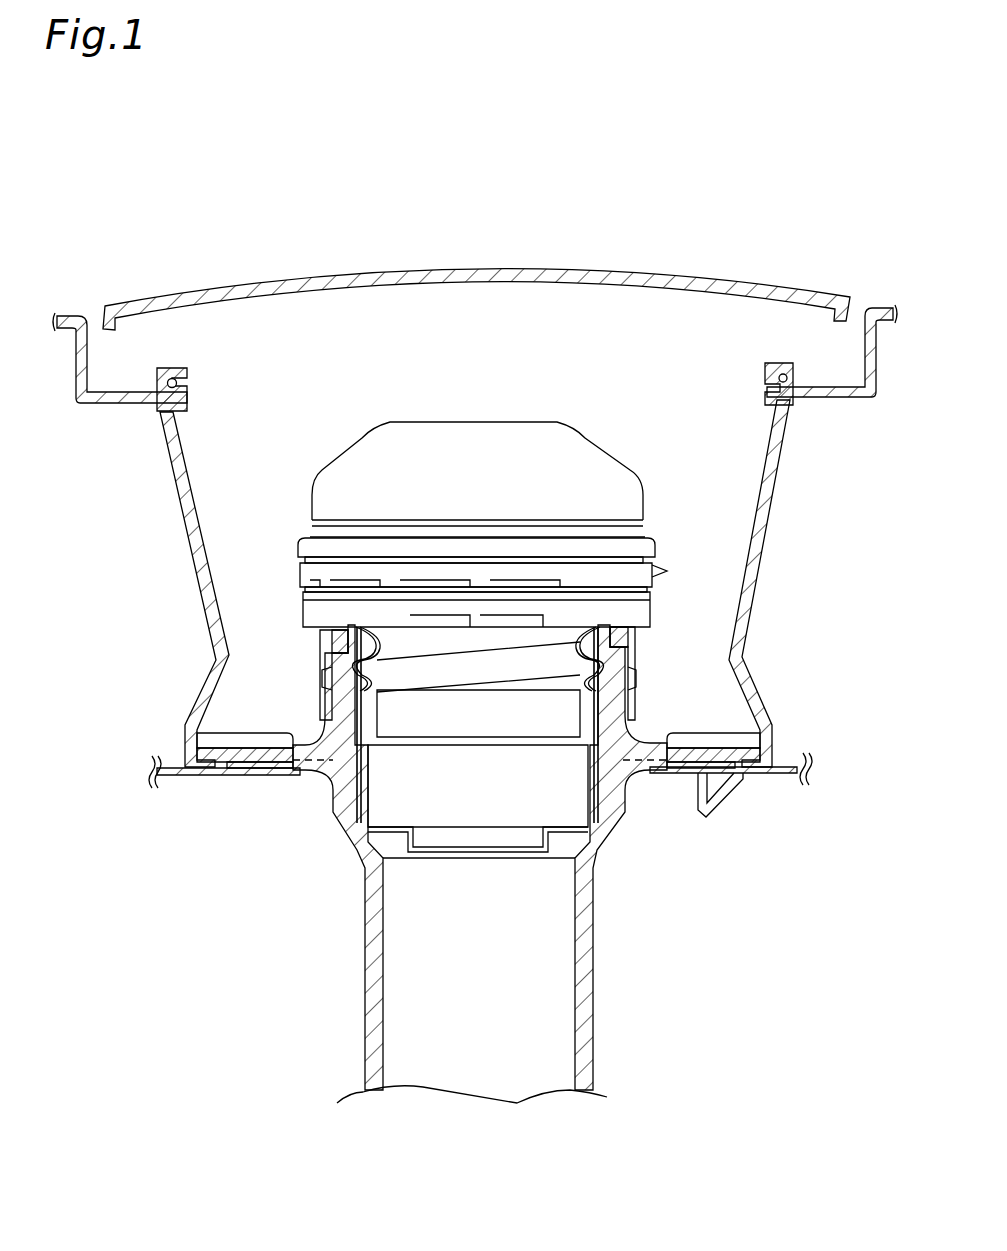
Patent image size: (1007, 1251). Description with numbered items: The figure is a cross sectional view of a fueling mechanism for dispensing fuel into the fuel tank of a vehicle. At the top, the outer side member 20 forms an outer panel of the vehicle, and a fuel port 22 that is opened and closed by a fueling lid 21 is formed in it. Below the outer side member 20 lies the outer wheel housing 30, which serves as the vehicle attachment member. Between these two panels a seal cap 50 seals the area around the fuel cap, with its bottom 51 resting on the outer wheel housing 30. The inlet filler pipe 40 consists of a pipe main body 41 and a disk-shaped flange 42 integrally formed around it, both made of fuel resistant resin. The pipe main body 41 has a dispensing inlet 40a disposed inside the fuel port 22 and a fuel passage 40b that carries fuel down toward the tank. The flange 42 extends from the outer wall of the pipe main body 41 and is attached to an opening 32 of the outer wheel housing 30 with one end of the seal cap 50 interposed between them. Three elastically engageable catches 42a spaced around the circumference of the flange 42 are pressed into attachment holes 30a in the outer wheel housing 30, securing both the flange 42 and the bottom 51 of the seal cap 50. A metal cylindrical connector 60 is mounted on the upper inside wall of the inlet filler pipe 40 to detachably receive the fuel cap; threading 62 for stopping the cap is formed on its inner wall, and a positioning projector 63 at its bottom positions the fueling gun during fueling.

The outer side member 20 is at (877, 308).
The fueling lid 21 is at (572, 276).
The fuel port 22 is at (723, 322).
The outer wheel housing 30 is at (788, 763).
The attachment hole 30a is at (720, 763).
The opening 32 is at (662, 772).
The inlet filler pipe 40 is at (429, 845).
The dispensing inlet 40a is at (590, 633).
The fuel passage 40b is at (575, 980).
The pipe main body 41 is at (347, 837).
The flange 42 is at (260, 752).
The catch 42a is at (717, 797).
The seal cap 50 is at (752, 573).
The bottom 51 is at (207, 766).
The connector 60 is at (590, 677).
The threading 62 is at (372, 692).
The positioning projector 63 is at (422, 848).